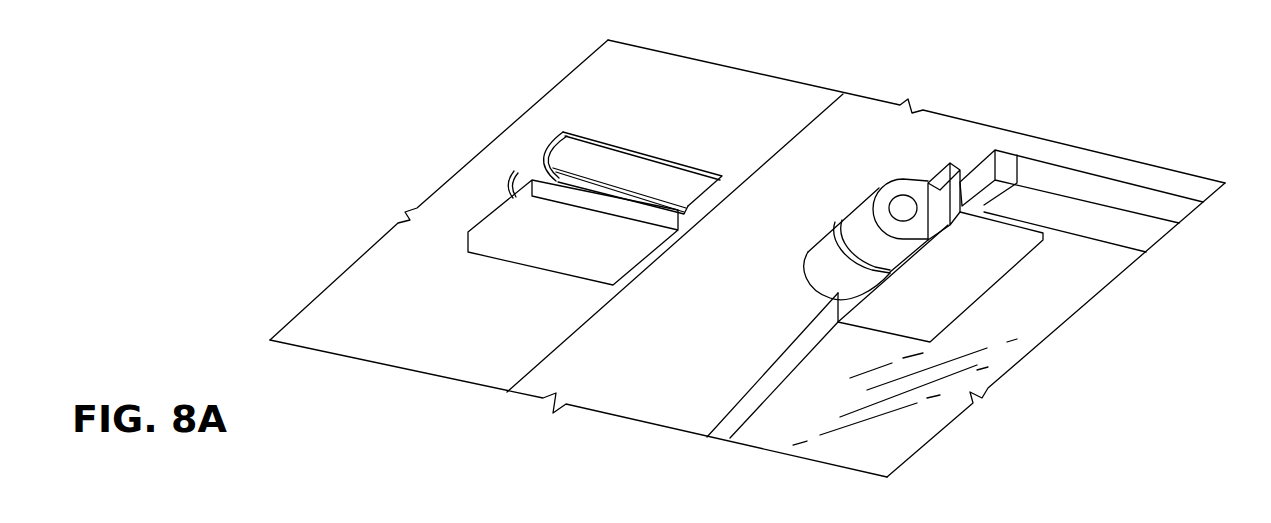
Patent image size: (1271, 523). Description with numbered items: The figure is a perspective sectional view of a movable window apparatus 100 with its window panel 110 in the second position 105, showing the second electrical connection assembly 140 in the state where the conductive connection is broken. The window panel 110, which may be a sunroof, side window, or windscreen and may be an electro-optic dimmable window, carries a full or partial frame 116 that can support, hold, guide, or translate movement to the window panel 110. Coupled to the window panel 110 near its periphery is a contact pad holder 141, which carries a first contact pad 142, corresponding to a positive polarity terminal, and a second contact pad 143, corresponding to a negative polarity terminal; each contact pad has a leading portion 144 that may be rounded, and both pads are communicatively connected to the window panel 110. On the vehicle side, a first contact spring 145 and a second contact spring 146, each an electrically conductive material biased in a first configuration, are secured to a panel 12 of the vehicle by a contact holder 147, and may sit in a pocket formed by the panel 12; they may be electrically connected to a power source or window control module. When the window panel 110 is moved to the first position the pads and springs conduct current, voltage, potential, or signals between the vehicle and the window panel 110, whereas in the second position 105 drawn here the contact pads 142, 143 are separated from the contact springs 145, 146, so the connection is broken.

The panel 12 is at (378, 336).
The movable window apparatus 100 is at (1085, 90).
The second position 105 is at (1020, 116).
The window panel 110 is at (1068, 284).
The frame 116 is at (695, 402).
The second electrical connection assembly 140 is at (1078, 250).
The contact pad holder 141 is at (953, 166).
The first contact pad 142 is at (898, 188).
The second contact pad 143 is at (806, 264).
The leading portion 144 is at (843, 190).
The first contact spring 145 is at (533, 162).
The second contact spring 146 is at (498, 195).
The contact holder 147 is at (478, 237).